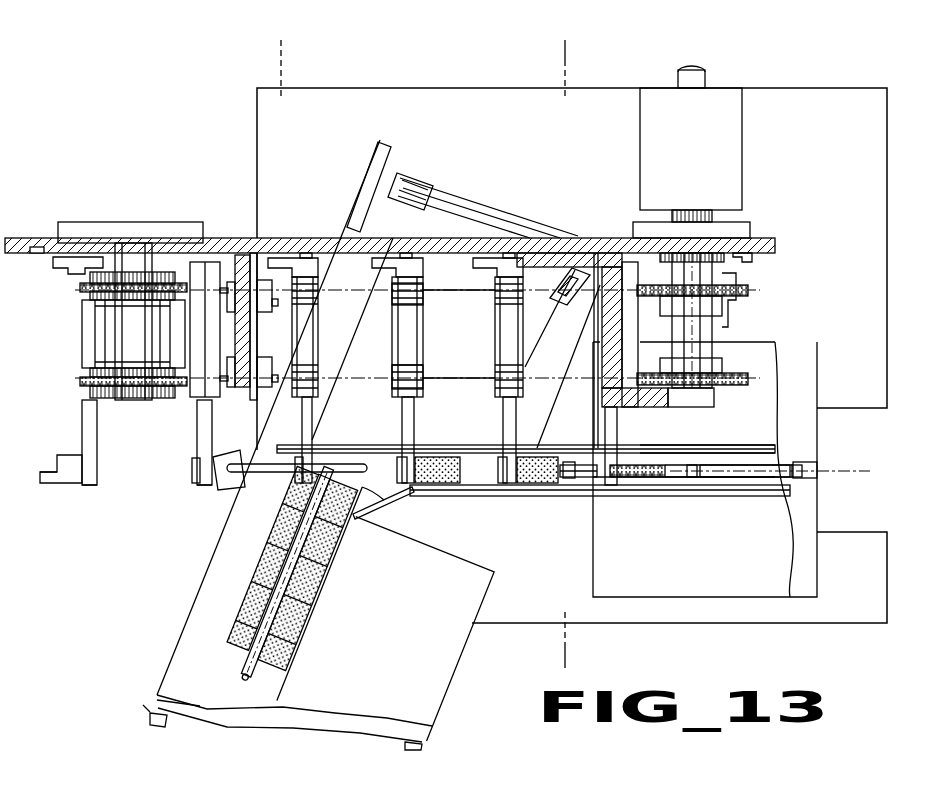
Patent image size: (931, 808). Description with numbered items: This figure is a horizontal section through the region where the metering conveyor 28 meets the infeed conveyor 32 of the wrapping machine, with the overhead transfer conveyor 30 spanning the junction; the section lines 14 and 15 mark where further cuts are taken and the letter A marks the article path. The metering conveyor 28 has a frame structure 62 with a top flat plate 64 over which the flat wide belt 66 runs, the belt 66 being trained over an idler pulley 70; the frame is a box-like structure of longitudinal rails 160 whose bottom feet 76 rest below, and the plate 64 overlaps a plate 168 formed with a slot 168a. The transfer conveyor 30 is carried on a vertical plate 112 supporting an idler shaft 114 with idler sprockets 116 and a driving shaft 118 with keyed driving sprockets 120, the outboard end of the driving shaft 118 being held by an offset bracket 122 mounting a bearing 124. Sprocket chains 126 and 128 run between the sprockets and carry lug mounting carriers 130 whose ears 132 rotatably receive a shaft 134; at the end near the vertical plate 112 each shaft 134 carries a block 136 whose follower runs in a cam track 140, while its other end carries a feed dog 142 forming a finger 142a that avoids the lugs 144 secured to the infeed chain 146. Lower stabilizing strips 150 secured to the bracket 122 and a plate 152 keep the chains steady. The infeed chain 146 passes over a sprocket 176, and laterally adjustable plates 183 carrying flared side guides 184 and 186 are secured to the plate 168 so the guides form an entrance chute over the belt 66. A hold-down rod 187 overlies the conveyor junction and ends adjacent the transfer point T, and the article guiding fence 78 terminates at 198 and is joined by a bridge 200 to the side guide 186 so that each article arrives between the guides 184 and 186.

The section line 14- 14 is at (277, 48).
The section line 15- 15 is at (560, 48).
The metering conveyor 28 is at (200, 580).
The transfer conveyor 30 is at (175, 445).
The infeed conveyor 32 is at (705, 447).
The frame structure 62 is at (143, 708).
The top flat plate 64 is at (157, 700).
The flat wide belt 66 is at (230, 668).
The idler pulley 70 is at (403, 175).
The side plate 76 is at (222, 541).
The article guiding fence 78 is at (383, 612).
The vertical plate 112 is at (490, 242).
The idler shaft 114 is at (138, 247).
The idler sprockets 116 is at (88, 372).
The driving shaft 118 is at (720, 277).
The driving sprockets 120 is at (738, 296).
The offset bracket 122 is at (606, 260).
The bearing 124 is at (716, 398).
The sprocket chain 126 is at (483, 285).
The sprocket chain 128 is at (484, 370).
The lug mounting carriers 130 is at (392, 360).
The ears 132 is at (418, 280).
The shaft 134 is at (197, 428).
The block 136 is at (62, 262).
The cam track 140 is at (752, 258).
The foot bracket 142 is at (57, 458).
The finger 142a is at (45, 483).
The lugs 144 is at (805, 462).
The infeed chain 146 is at (740, 472).
The lower set of strips 150 is at (260, 290).
The plate 152 is at (243, 260).
The longitudinal rails 160 is at (150, 718).
The plate 168 is at (820, 515).
The slot 168a is at (805, 470).
The sprocket 176 is at (650, 480).
The laterally adjustable plates 183 is at (790, 345).
The side guide 184 is at (748, 447).
The side guide 186 is at (712, 483).
The hold-down rod 187 is at (262, 679).
The fence termination 198 is at (335, 518).
The bridge 200 is at (384, 500).
The pads A is at (510, 497).
The transfer point T is at (348, 448).